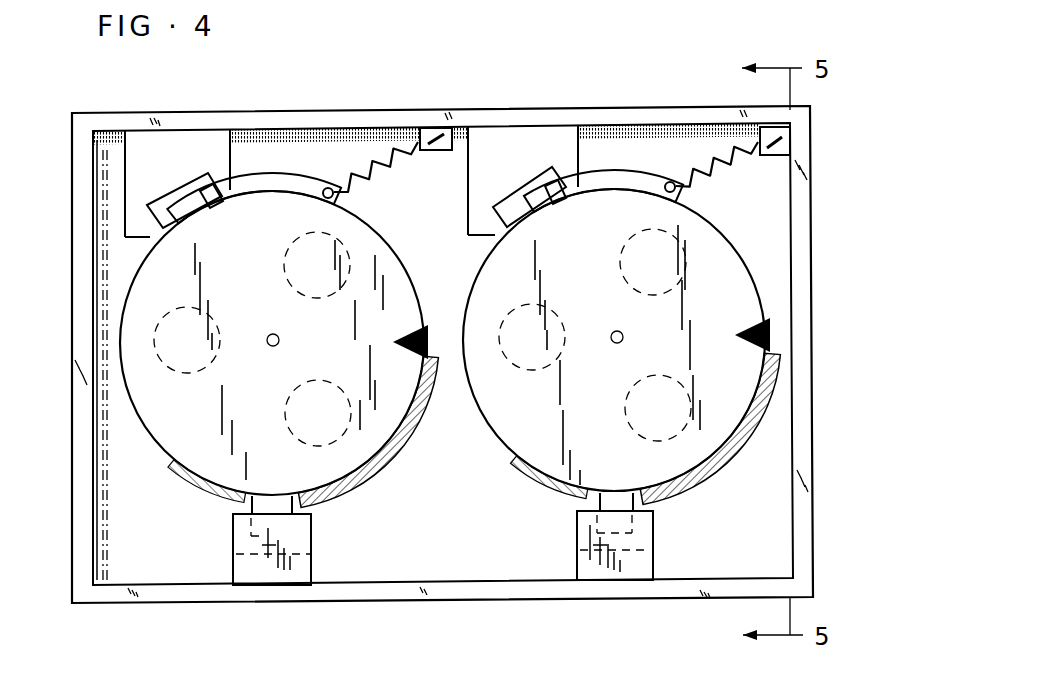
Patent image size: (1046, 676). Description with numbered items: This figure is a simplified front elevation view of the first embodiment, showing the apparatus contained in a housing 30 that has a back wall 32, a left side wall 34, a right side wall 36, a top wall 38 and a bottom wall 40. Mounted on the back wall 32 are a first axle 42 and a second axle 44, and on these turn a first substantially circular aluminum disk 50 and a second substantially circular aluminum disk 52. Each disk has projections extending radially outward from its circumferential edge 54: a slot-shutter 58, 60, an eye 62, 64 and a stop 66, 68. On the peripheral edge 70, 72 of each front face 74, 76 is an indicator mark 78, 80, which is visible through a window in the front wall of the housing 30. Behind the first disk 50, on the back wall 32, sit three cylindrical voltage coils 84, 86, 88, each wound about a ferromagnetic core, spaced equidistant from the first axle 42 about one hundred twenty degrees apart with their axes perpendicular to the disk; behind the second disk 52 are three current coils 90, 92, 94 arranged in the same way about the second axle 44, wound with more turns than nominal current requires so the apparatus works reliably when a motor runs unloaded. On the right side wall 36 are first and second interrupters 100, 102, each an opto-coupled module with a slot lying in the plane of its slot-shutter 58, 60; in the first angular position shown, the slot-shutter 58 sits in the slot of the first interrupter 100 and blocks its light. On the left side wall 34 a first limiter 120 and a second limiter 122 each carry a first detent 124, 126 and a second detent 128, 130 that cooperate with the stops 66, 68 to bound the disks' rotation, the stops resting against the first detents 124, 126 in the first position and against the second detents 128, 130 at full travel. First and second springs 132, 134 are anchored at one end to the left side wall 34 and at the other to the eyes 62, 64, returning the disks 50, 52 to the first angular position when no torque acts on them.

The housing 30 is at (576, 598).
The back wall 32 is at (440, 510).
The left side wall 34 is at (244, 112).
The right side wall 36 is at (420, 604).
The top wall 38 is at (813, 424).
The bottom wall 40 is at (72, 470).
The first axle 42 is at (616, 345).
The second axle 44 is at (270, 334).
The first substantially circular aluminum disk 50 is at (580, 448).
The second substantially circular aluminum disk 52 is at (256, 478).
The circumferential edge 54 is at (708, 458).
The slot-shutter 58 is at (660, 506).
The slot-shutter 60 is at (294, 540).
The eye 62 is at (664, 187).
The eye 64 is at (318, 192).
The stop 66 is at (534, 188).
The stop 68 is at (206, 204).
The peripheral edge 70 is at (755, 358).
The peripheral edge 72 is at (432, 368).
The front face 74 is at (738, 372).
The front face 76 is at (376, 329).
The indicator mark 78 is at (740, 322).
The indicator mark 80 is at (433, 325).
The voltage coil 84 is at (655, 298).
The voltage coil 86 is at (660, 445).
The voltage coil 88 is at (527, 370).
The current coil 90 is at (300, 247).
The current coil 92 is at (346, 441).
The current coil 94 is at (186, 378).
The first interrupter 100 is at (577, 535).
The second interrupter 102 is at (233, 543).
The first limiter 120 is at (516, 145).
The second limiter 122 is at (166, 180).
The first detent 124 is at (575, 178).
The first detent 126 is at (232, 174).
The second detent 128 is at (480, 228).
The second detent 130 is at (150, 214).
The first spring 132 is at (733, 178).
The second spring 134 is at (400, 146).